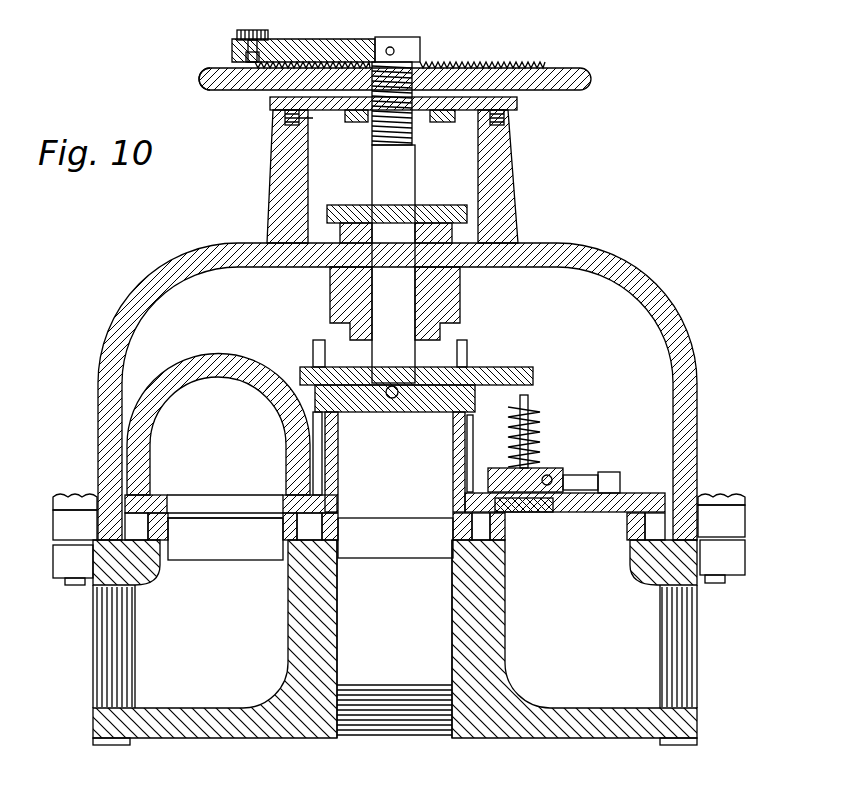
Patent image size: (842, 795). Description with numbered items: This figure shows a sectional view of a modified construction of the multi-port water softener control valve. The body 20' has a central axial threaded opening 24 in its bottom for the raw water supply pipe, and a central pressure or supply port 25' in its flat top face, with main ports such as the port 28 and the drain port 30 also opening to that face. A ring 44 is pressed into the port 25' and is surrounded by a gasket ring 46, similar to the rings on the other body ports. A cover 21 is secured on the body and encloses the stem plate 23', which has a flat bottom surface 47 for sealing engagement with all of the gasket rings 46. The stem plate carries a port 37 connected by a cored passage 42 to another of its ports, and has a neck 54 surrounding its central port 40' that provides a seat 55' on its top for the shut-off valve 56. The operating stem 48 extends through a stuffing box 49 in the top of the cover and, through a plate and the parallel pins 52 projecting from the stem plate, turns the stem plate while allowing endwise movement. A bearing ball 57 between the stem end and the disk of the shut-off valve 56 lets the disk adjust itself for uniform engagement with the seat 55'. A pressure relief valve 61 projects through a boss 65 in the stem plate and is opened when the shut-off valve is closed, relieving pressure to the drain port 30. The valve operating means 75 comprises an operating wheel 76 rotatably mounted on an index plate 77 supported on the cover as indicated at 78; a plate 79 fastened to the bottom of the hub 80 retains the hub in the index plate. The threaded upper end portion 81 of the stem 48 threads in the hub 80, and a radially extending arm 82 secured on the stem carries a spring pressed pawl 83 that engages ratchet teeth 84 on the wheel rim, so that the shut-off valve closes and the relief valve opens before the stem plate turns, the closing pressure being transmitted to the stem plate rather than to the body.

The body 20' is at (366, 642).
The cover 21 is at (693, 345).
The stem plate 23' is at (565, 485).
The central axial threaded opening 24 is at (393, 723).
The central pressure or supply port 25' is at (394, 639).
The main port 28 is at (215, 639).
The drain port 30 is at (574, 639).
The stem plate port 37 is at (205, 495).
The central port of stem plate 40' is at (395, 462).
The cored passage 42 is at (213, 372).
The ring 44 is at (340, 530).
The gasket ring 46 is at (283, 530).
The flat bottom surface 47 is at (672, 528).
The operating stem 48 is at (398, 182).
The stuffing box 49 is at (337, 207).
The pins 52 is at (468, 346).
The tubular neck portion 54 is at (476, 408).
The seat 55' is at (395, 418).
The shut-off valve 56 is at (420, 412).
The bearing ball 57 is at (392, 386).
The pressure relief valve 61 is at (530, 512).
The boss 65 is at (553, 476).
The valve operating means 75 is at (549, 89).
The operating wheel 76 is at (234, 89).
The index plate 77 is at (463, 110).
The support 78 is at (512, 162).
The plate 79 is at (356, 113).
The hub 80 is at (423, 68).
The threaded upper end portion 81 is at (372, 133).
The radially extending arm 82 is at (355, 44).
The spring pressed pawl 83 is at (262, 31).
The ratchet teeth 84 is at (500, 62).